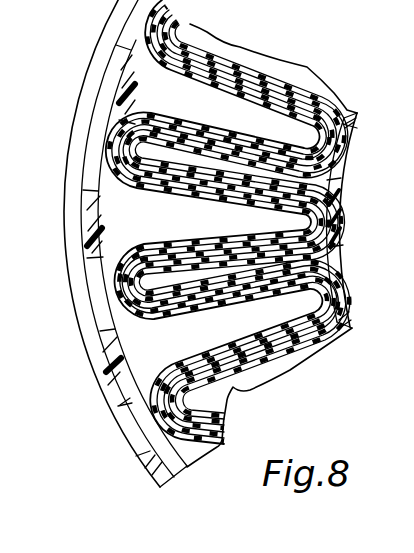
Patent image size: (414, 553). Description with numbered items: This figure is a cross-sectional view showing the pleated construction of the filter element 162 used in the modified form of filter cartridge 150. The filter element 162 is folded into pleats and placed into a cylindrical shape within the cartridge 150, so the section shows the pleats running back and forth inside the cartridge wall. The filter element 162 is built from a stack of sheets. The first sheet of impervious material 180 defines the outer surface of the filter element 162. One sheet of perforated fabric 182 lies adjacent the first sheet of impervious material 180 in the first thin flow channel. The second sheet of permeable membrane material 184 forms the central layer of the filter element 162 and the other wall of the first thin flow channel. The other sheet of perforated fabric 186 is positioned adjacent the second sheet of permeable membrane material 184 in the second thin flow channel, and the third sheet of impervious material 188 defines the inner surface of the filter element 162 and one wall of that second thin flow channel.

The cartridge 150 is at (75, 86).
The filter element 162 is at (190, 114).
The first sheet of impervious material 180 is at (113, 284).
The one sheet of perforated fabric 182 is at (122, 262).
The second sheet of permeable membrane material 184 is at (180, 253).
The other sheet of perforated fabric 186 is at (223, 250).
The third sheet of impervious material 188 is at (246, 262).